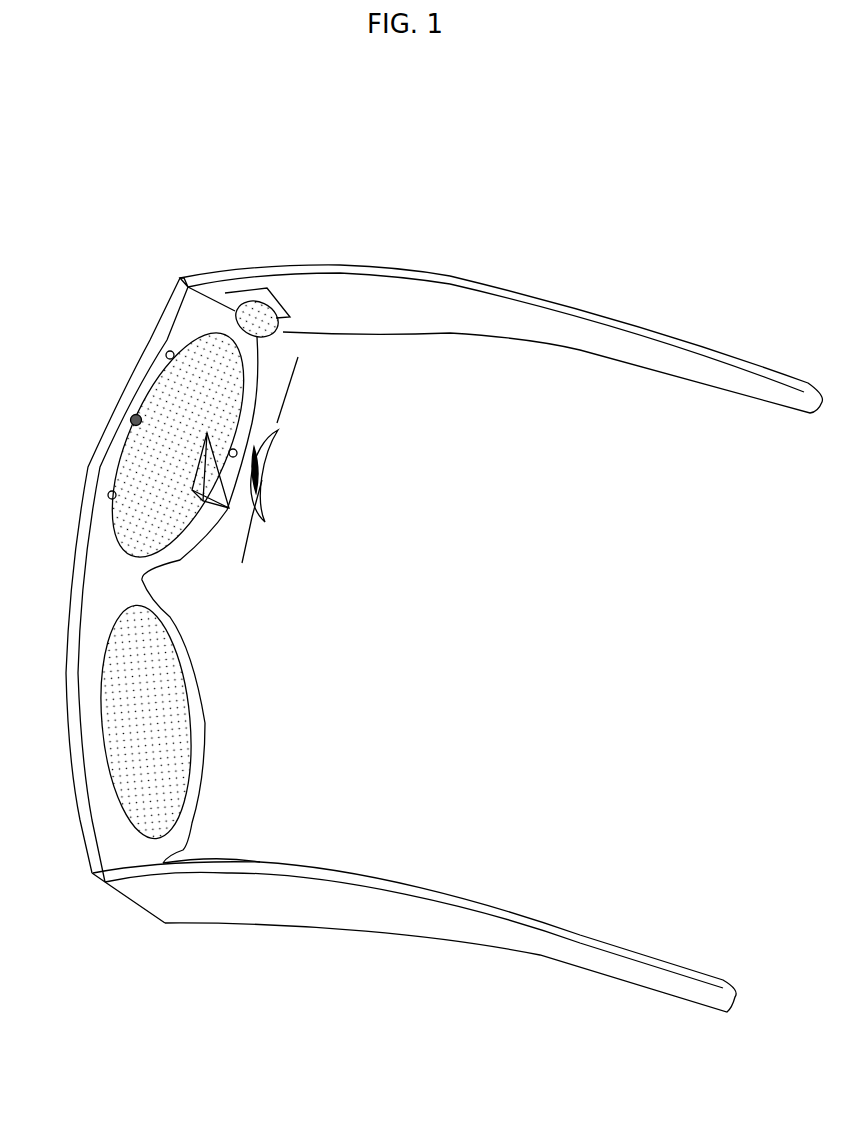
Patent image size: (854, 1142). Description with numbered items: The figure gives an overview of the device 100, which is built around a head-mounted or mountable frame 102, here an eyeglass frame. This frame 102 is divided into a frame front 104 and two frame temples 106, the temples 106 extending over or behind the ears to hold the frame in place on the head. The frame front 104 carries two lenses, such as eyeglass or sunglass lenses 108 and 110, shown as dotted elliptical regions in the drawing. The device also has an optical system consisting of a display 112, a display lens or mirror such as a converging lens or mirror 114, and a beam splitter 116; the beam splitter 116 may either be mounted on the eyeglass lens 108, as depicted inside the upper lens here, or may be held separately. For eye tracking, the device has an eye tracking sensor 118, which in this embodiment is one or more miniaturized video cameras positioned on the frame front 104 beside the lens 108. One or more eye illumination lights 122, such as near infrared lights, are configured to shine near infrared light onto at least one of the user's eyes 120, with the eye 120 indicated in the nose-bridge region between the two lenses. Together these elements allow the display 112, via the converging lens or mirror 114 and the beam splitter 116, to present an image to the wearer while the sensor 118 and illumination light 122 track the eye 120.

The device 100 is at (192, 166).
The head-mounted or mountable frame 102 is at (118, 298).
The frame front 104 is at (130, 358).
The frame temples 106 is at (500, 277).
The eyeglass lens 108 is at (162, 522).
The eyeglass lens 110 is at (163, 740).
The display 112 is at (265, 298).
The converging lens or mirror 114 is at (285, 335).
The beam splitter 116 is at (212, 512).
The eye tracking sensor 118 is at (136, 410).
The user's eye 120 is at (272, 482).
The eye illumination light 122 is at (112, 483).